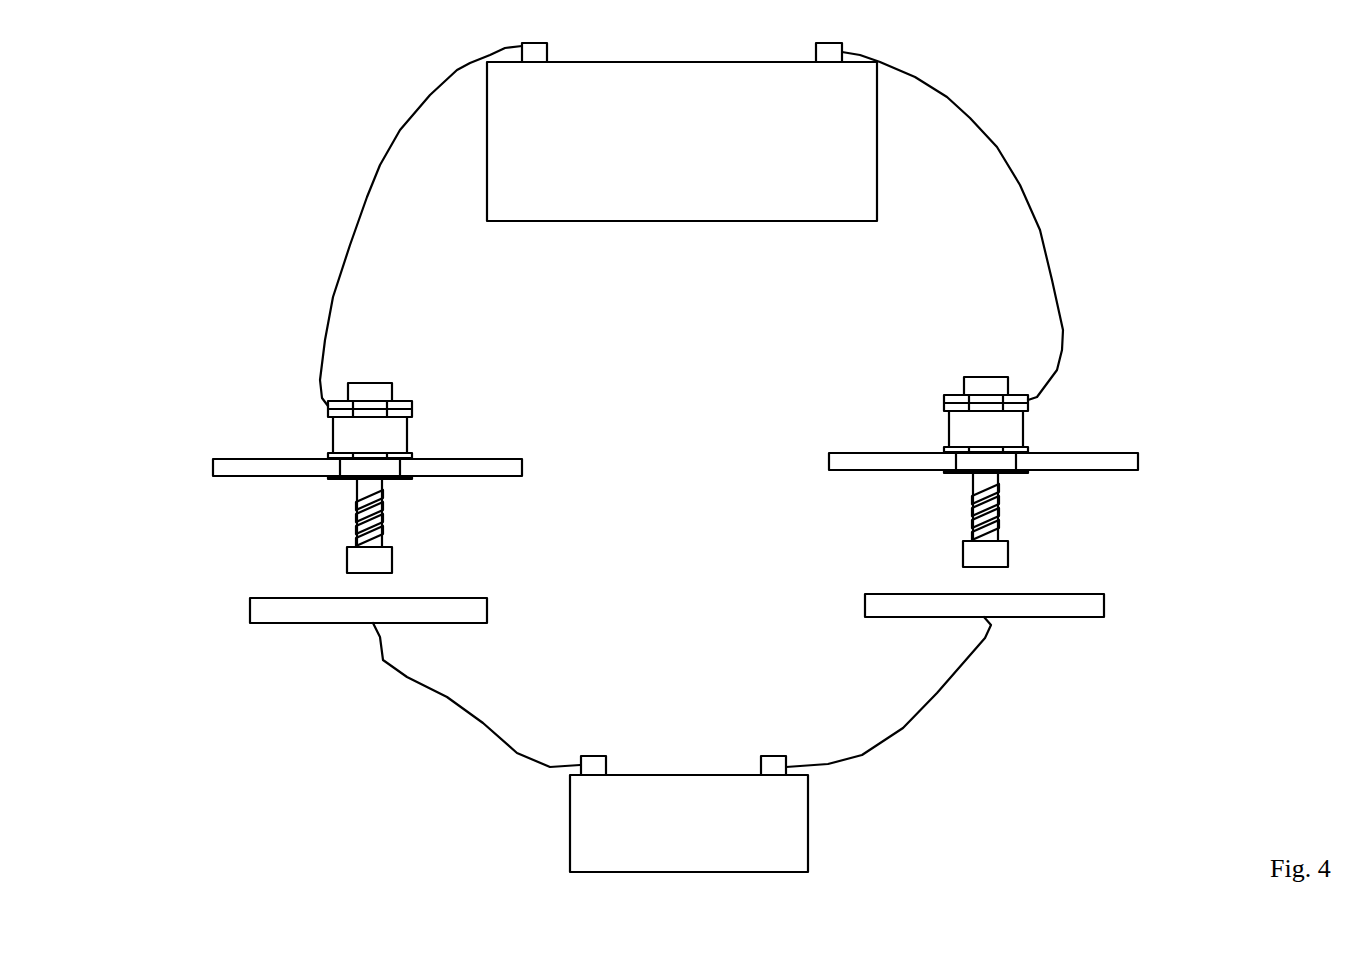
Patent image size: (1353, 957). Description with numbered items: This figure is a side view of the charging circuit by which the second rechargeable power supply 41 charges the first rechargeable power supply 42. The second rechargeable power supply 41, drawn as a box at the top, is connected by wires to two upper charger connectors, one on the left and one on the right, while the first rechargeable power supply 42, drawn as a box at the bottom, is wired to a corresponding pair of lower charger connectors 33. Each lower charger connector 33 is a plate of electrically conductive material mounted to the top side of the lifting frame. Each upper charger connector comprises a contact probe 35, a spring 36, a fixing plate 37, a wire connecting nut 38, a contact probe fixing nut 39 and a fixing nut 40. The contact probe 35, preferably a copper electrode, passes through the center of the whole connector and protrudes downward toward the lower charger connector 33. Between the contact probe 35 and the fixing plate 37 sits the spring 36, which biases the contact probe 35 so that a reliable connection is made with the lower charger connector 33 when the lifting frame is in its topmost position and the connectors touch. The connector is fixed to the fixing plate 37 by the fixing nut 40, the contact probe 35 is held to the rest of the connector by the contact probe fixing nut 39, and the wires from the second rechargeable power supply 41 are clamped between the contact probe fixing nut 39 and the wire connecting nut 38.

The lower charger connector 33 is at (249, 613).
The contact probe 35 is at (393, 561).
The spring 36 is at (384, 527).
The fixing plate 37 is at (523, 467).
The wire connecting nut 38 is at (413, 403).
The contact probe fixing nut 39 is at (327, 413).
The fixing nut 40 is at (327, 455).
The second rechargeable power supply 41 is at (880, 145).
The first rechargeable power supply 42 is at (809, 824).